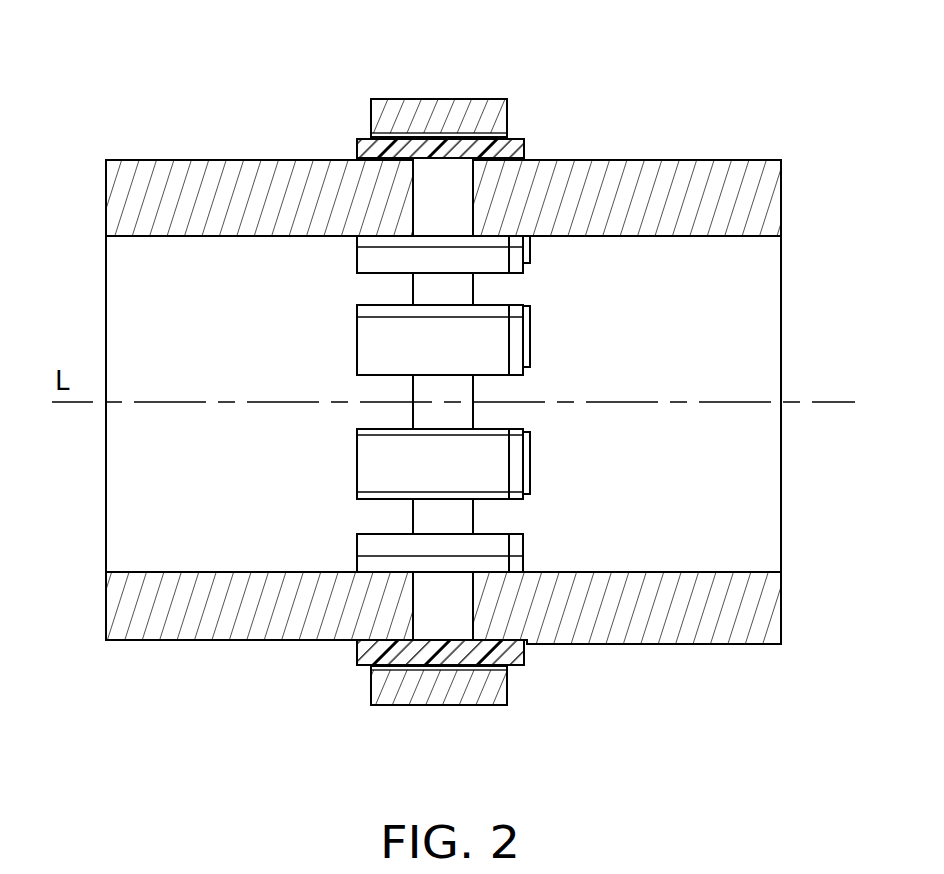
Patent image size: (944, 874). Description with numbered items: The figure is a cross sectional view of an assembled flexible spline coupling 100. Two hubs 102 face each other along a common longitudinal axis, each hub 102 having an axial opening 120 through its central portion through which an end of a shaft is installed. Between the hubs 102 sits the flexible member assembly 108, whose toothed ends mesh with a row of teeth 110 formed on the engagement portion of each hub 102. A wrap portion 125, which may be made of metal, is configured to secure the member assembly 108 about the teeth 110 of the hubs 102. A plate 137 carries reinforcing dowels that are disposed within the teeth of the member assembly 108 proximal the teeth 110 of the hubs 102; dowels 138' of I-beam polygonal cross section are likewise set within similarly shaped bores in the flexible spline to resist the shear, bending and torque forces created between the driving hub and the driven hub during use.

The flexible spline coupling 100 is at (216, 104).
The hub 102 is at (692, 193).
The flexible member assembly 108 is at (344, 683).
The teeth 110 is at (377, 413).
The axial opening 120 is at (137, 322).
The wrap portion 125 is at (463, 97).
The plate 137 is at (525, 147).
The dowels 138' is at (565, 332).